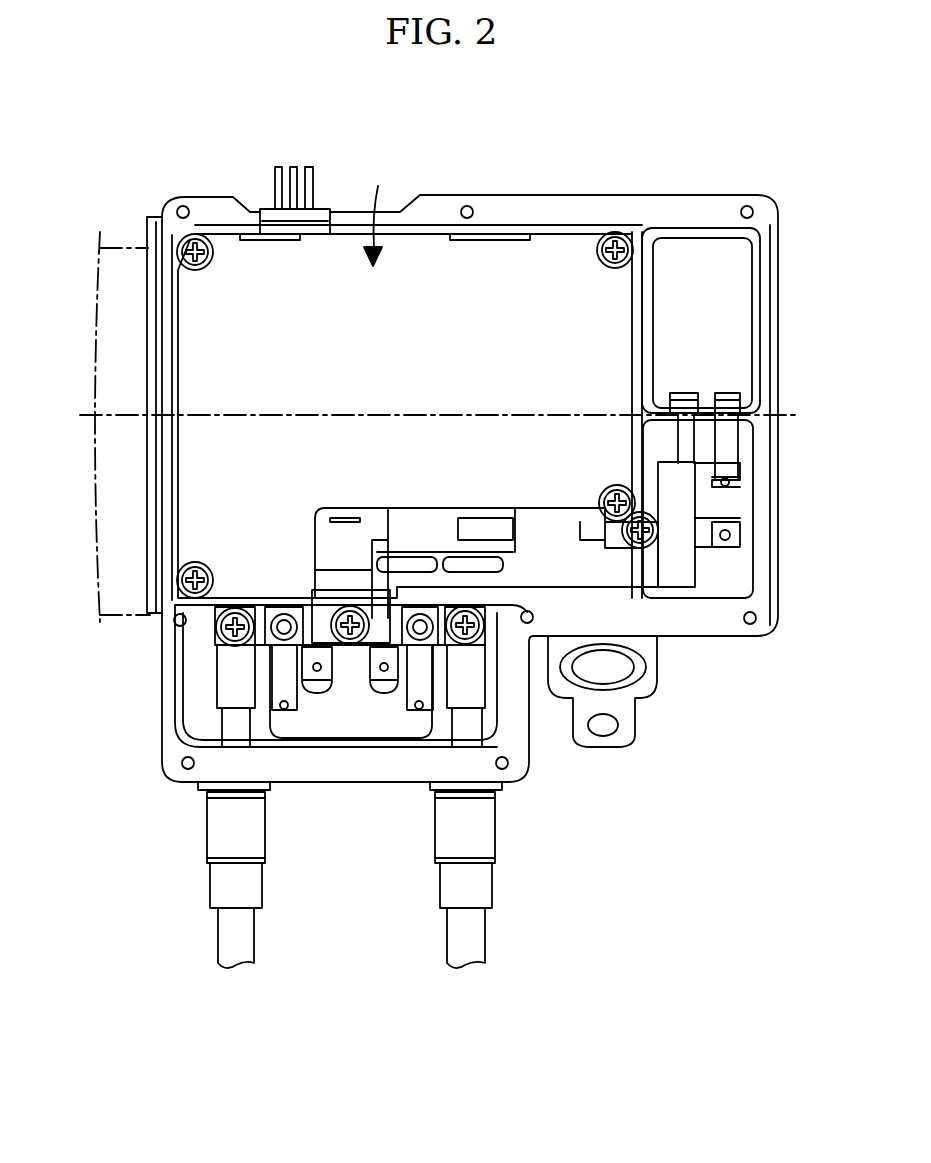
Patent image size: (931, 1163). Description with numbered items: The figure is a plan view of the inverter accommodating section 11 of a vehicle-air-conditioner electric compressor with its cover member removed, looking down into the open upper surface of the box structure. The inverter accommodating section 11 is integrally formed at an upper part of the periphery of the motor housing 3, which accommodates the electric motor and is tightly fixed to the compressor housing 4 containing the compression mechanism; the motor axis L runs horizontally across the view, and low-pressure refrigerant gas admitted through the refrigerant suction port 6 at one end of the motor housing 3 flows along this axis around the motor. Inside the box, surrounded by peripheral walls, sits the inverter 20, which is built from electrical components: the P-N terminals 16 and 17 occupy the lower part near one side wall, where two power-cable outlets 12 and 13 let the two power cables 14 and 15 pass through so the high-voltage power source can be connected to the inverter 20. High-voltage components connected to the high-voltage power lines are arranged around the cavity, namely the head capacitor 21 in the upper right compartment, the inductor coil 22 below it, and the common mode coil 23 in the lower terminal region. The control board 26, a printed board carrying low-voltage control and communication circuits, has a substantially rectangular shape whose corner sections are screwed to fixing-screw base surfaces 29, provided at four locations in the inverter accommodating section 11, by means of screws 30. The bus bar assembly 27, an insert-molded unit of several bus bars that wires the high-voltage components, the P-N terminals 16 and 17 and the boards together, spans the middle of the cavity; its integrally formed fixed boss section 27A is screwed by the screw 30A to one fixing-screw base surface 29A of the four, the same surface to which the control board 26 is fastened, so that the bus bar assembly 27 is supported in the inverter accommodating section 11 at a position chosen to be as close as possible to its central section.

The inverter accommodating section 11 is at (486, 200).
The motor housing 3 is at (152, 543).
The compressor housing 4 is at (125, 502).
The motor axis L is at (272, 437).
The control board 26 is at (523, 278).
The inverter 20 is at (380, 210).
The head capacitor 21 is at (745, 336).
The inductor coil 22 is at (732, 495).
The bus bar assembly 27 is at (514, 557).
The fixed boss section 27A is at (628, 553).
The fixing-screw base surfaces 29 is at (185, 246).
The screws 30 is at (197, 243).
The fixing-screw base surface 29A is at (648, 512).
The screw 30A is at (655, 536).
The refrigerant suction port 6 is at (640, 668).
The common mode coil 23 is at (335, 727).
The P-N terminal 16 is at (240, 642).
The P-N terminal 17 is at (466, 644).
The power-cable outlet 12 is at (200, 790).
The power-cable outlet 13 is at (432, 790).
The power cable 14 is at (220, 889).
The power cable 15 is at (485, 889).